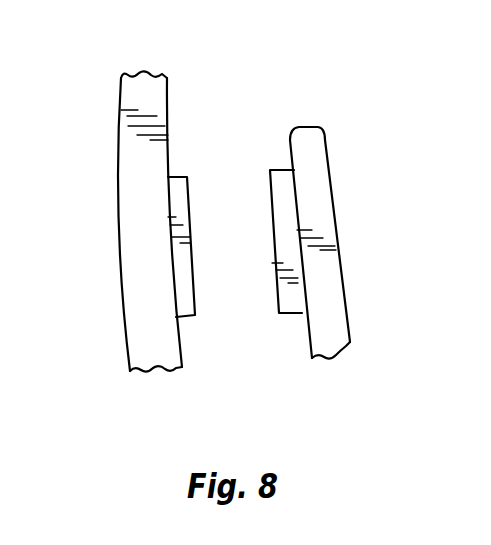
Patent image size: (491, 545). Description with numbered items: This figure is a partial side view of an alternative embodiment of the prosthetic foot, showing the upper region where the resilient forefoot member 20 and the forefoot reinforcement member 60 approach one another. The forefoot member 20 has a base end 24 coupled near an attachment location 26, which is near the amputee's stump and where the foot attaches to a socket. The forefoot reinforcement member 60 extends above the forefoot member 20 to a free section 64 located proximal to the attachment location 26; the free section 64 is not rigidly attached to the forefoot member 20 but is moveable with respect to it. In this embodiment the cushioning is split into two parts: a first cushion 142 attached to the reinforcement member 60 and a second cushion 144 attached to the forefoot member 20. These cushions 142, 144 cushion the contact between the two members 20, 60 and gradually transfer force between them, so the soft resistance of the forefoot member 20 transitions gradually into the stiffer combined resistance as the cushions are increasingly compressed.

The forefoot member 20 is at (126, 360).
The base end 24 is at (120, 90).
The attachment location 26 is at (168, 97).
The forefoot reinforcement member 60 is at (348, 322).
The free section 64 is at (328, 150).
The first cushion 142 is at (279, 313).
The second cushion 144 is at (195, 315).